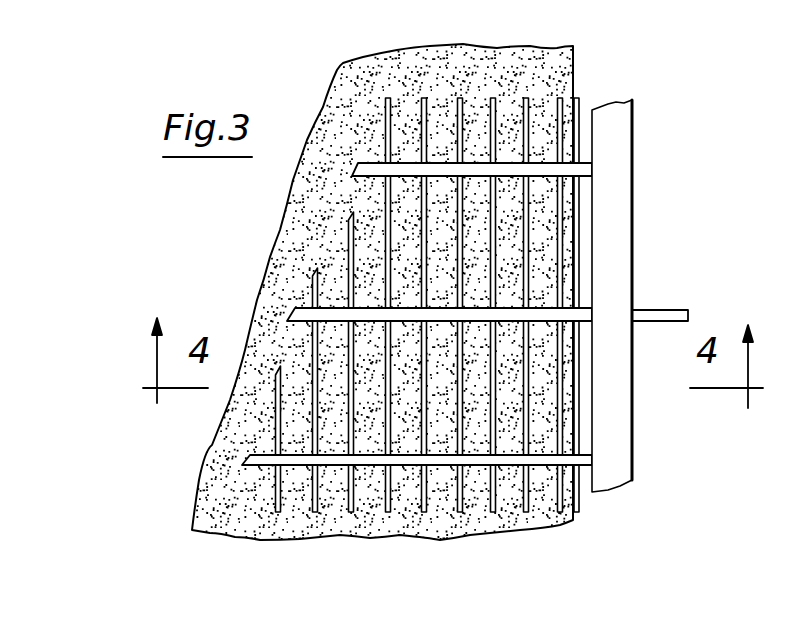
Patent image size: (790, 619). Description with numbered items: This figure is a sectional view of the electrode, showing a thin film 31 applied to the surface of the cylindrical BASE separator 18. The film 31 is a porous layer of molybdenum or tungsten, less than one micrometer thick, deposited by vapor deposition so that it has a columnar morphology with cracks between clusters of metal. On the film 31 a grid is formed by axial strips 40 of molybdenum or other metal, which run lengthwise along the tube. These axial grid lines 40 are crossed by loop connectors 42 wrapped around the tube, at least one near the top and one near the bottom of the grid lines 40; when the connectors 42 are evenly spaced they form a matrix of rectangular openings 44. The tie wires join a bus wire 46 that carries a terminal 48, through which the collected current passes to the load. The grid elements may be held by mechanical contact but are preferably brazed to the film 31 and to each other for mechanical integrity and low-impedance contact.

The BASE separator 18 is at (548, 55).
The thin film 31 is at (510, 513).
The axial strips 40 is at (577, 497).
The loop connectors 42 is at (270, 460).
The rectangular openings 44 is at (447, 393).
The bus wire 46 is at (618, 183).
The terminal 48 is at (660, 315).